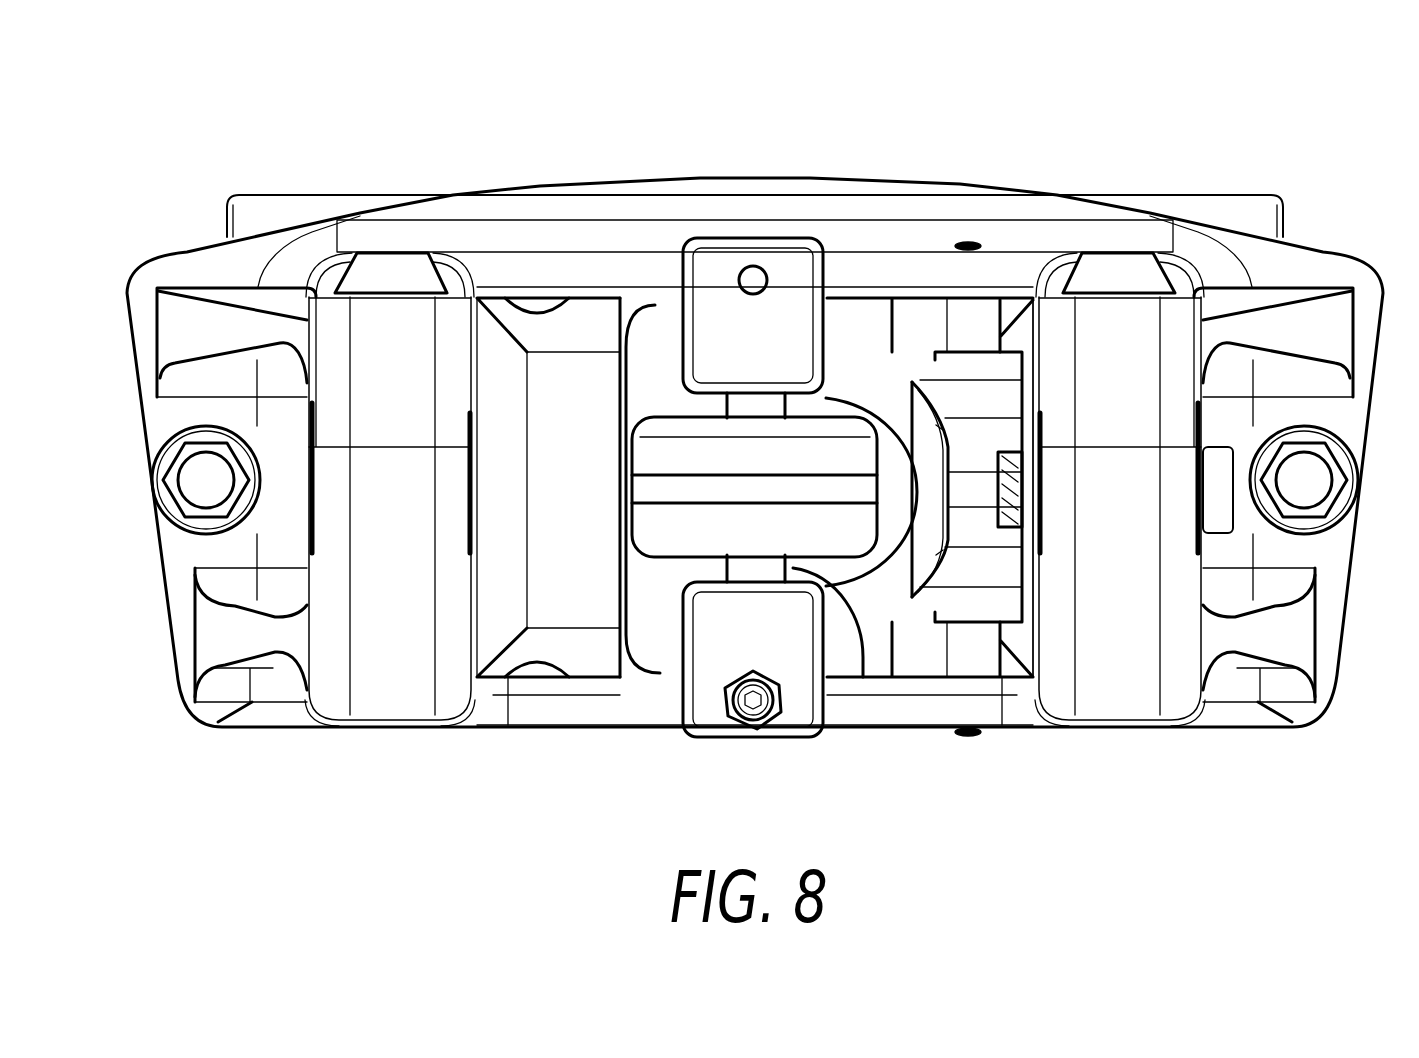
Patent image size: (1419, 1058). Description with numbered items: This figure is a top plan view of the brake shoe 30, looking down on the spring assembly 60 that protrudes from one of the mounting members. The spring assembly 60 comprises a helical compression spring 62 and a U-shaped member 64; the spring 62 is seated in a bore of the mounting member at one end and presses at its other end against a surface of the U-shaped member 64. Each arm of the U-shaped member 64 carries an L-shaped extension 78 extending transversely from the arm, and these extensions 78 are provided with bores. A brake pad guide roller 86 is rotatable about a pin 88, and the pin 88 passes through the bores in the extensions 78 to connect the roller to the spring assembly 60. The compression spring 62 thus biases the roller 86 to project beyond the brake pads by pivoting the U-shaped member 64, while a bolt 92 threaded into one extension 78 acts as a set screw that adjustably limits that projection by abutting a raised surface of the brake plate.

The clamp assembly 30 is at (755, 375).
The spring assembly 60 is at (920, 341).
The helical compression spring 62 is at (1075, 318).
The U-shaped member 64 is at (957, 592).
The L-shaped extension 78 is at (728, 458).
The brake pad guide roller 86 is at (749, 624).
The pin 88 is at (768, 565).
The bolt 92 is at (767, 751).